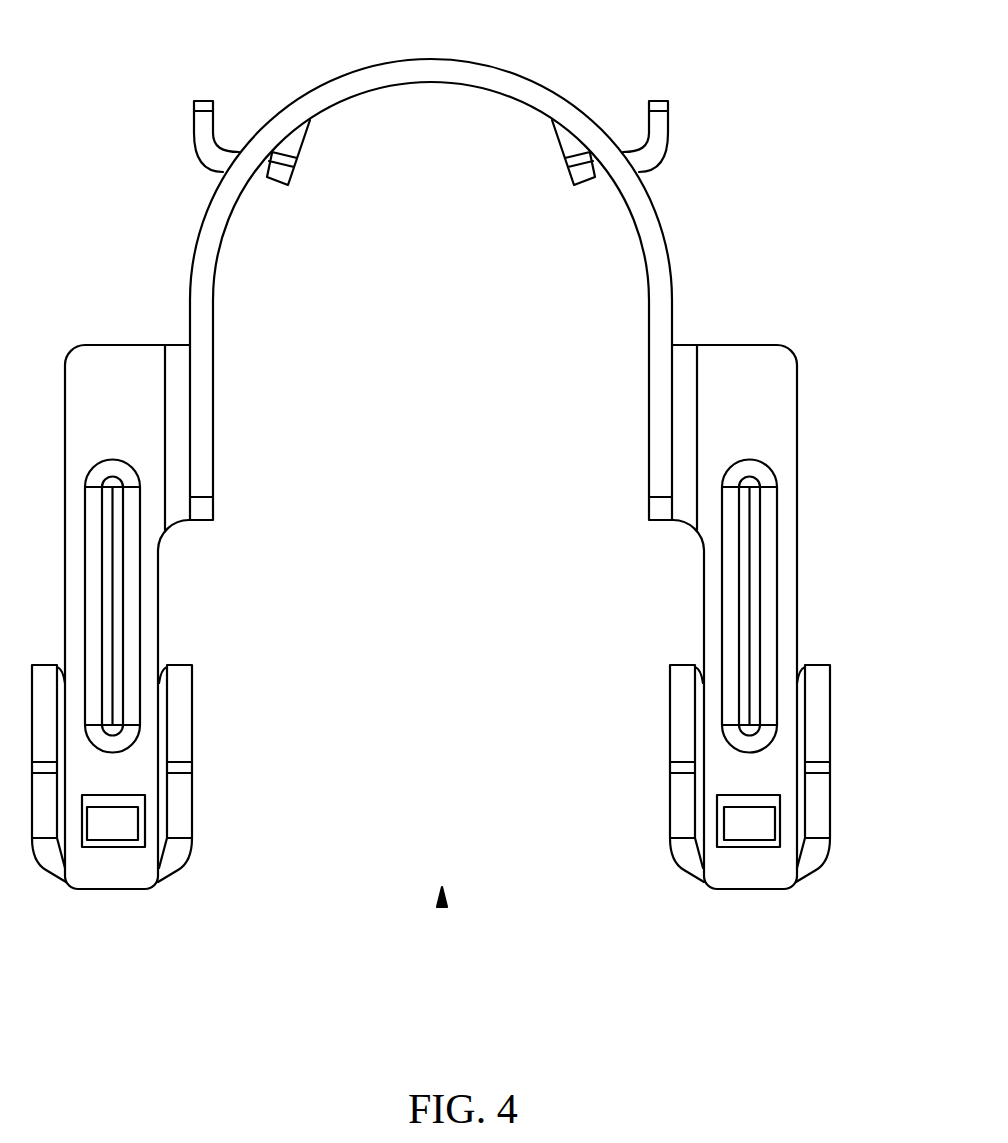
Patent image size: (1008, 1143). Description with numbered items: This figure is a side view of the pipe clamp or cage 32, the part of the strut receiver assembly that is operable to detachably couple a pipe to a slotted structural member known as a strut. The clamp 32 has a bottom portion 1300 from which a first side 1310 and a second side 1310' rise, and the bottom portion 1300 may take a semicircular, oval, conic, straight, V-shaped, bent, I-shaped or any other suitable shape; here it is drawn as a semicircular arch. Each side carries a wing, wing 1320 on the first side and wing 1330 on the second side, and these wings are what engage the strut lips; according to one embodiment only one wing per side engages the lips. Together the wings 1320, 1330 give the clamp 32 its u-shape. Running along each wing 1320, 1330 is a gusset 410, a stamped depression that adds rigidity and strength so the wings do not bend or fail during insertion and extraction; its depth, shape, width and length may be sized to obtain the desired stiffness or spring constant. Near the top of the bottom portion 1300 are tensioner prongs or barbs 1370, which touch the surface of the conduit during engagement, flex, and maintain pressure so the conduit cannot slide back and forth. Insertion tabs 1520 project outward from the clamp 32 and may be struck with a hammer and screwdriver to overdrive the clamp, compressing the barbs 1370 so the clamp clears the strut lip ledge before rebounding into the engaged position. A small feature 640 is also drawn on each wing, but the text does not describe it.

The bottom portion 1300 is at (427, 58).
The first side 1310 is at (153, 399).
The second side 1310' is at (707, 370).
The wing 1320 is at (143, 407).
The wing 1330 is at (760, 410).
The tensioner prongs or barbs 1370 is at (298, 152).
The insertion tabs 1520 is at (193, 122).
The gusset 410 is at (123, 597).
The connector 640 is at (105, 823).
The pipe clamp or cage 32 is at (442, 905).